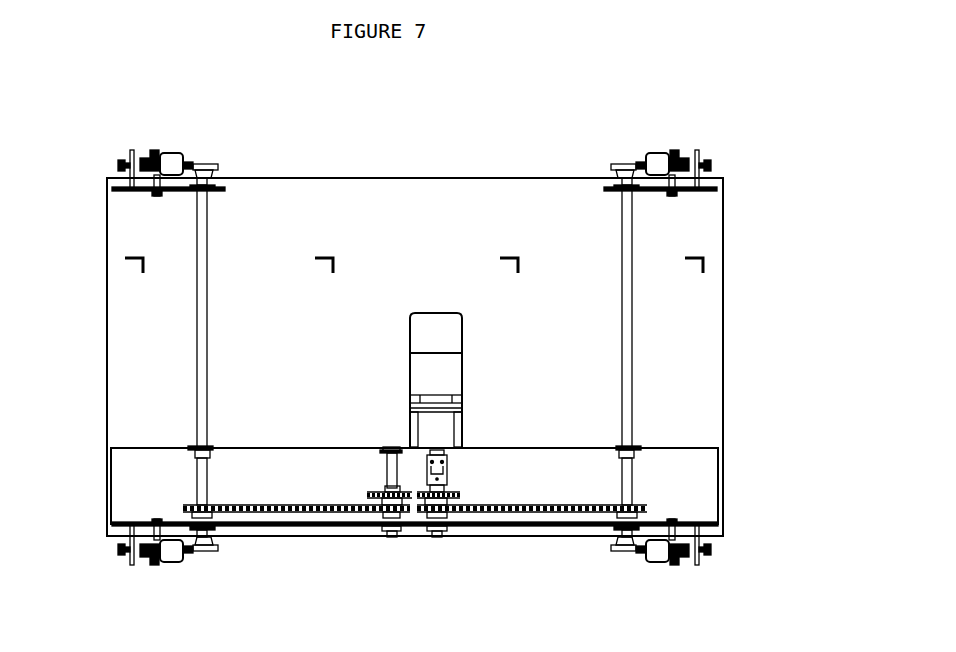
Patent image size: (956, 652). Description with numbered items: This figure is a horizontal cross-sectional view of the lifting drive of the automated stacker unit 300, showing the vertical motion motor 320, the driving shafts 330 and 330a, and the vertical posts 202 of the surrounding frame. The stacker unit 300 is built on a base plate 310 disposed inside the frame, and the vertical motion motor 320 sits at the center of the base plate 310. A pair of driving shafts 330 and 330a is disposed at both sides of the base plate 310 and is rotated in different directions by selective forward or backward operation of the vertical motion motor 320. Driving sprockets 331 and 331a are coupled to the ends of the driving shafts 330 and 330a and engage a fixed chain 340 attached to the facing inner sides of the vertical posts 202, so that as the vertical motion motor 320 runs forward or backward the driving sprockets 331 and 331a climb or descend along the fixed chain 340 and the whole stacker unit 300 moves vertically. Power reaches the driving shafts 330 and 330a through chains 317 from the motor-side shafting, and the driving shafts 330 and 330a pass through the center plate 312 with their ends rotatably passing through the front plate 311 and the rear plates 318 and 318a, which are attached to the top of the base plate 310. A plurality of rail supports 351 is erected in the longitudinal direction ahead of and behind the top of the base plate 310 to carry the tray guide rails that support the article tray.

The vertical post 202 is at (170, 152).
The automated stacker unit 300 is at (399, 160).
The base plate 310 is at (688, 393).
The front plate 311 is at (327, 525).
The center plate 312 is at (160, 447).
The chain 317 is at (517, 512).
The rear plate 318 is at (140, 190).
The rear plate 318a is at (690, 192).
The vertical motion motor 320 is at (440, 377).
The driving shaft 330 is at (205, 233).
The driving shaft 330a is at (623, 334).
The driving sprocket 331 is at (205, 163).
The driving sprocket 331a is at (615, 163).
The fixed chain 340 is at (186, 561).
The rail support 351 is at (701, 263).